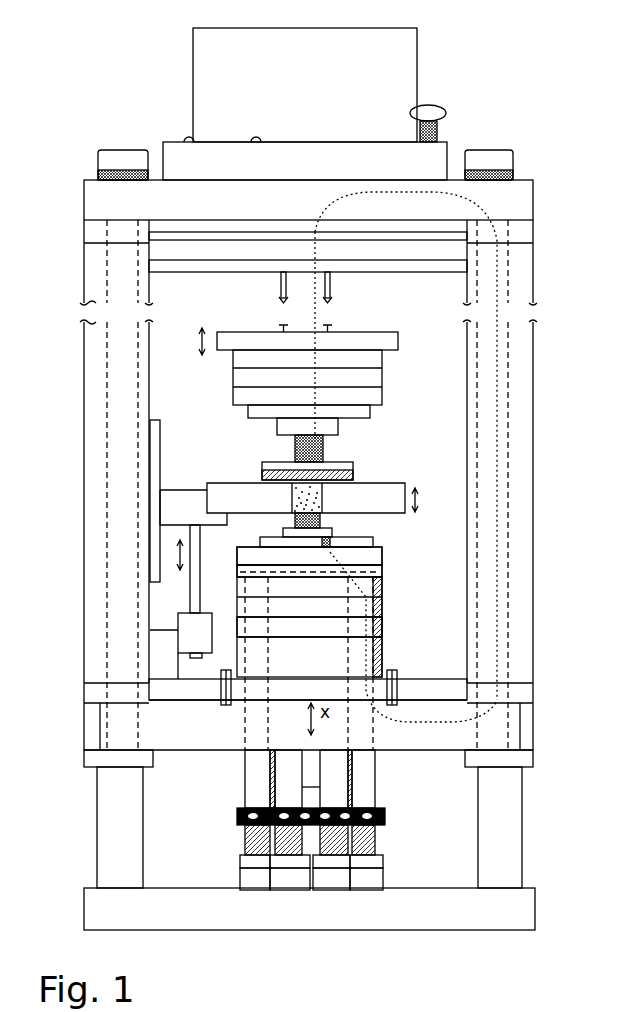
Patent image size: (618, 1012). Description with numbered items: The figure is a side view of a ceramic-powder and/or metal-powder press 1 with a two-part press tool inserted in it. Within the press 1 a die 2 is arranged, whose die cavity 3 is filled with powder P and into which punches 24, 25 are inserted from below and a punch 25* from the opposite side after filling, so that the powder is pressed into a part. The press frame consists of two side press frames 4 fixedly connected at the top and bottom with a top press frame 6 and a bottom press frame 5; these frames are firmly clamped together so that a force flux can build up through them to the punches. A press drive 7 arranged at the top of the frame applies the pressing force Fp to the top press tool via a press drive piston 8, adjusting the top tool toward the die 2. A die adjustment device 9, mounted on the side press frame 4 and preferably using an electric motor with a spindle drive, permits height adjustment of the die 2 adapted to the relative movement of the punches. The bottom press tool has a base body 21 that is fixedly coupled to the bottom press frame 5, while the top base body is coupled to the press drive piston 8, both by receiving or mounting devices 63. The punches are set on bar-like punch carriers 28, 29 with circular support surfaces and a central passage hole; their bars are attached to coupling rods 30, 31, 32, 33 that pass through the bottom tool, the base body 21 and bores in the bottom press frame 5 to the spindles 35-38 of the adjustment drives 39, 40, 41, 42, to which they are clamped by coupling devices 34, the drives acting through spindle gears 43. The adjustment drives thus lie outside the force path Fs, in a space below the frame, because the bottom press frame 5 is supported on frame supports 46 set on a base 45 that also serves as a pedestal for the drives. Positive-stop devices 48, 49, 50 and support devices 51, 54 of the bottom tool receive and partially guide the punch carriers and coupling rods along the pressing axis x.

The ceramic-powder and/or metal-powder press 1 is at (307, 477).
The die 2 is at (405, 485).
The die cavity 3 is at (355, 480).
The side press frame 4 is at (107, 437).
The bottom press frame 5 is at (533, 207).
The top press frame 6 is at (535, 725).
The press drive 7 is at (193, 72).
The press drive piston 8 is at (283, 290).
The die adjustment device 9 is at (195, 480).
The base body 21 is at (308, 622).
The punch 24 is at (288, 535).
The punch 25 is at (326, 535).
The punch carrier 28 is at (242, 572).
The punch carrier 29 is at (285, 532).
The coupling rod 30 is at (308, 692).
The coupling rod 31 is at (243, 787).
The coupling rod 32 is at (377, 787).
The coupling rod 33 is at (245, 800).
The coupling devices 34 is at (386, 818).
The spindles 35-38 is at (420, 835).
The adjustment drive 39 is at (367, 890).
The adjustment drive 40 is at (252, 890).
The adjustment drive 41 is at (325, 890).
The adjustment drive 42 is at (283, 890).
The spindle gears 43 is at (291, 898).
The base 45 is at (535, 889).
The frame supports 46 is at (158, 832).
The positive-stop device 48 is at (383, 628).
The positive-stop device 49 is at (383, 587).
The positive-stop device 50 is at (383, 548).
The support device 51 is at (385, 668).
The support device 54 is at (383, 570).
The receiving or mounting devices 63 is at (226, 701).